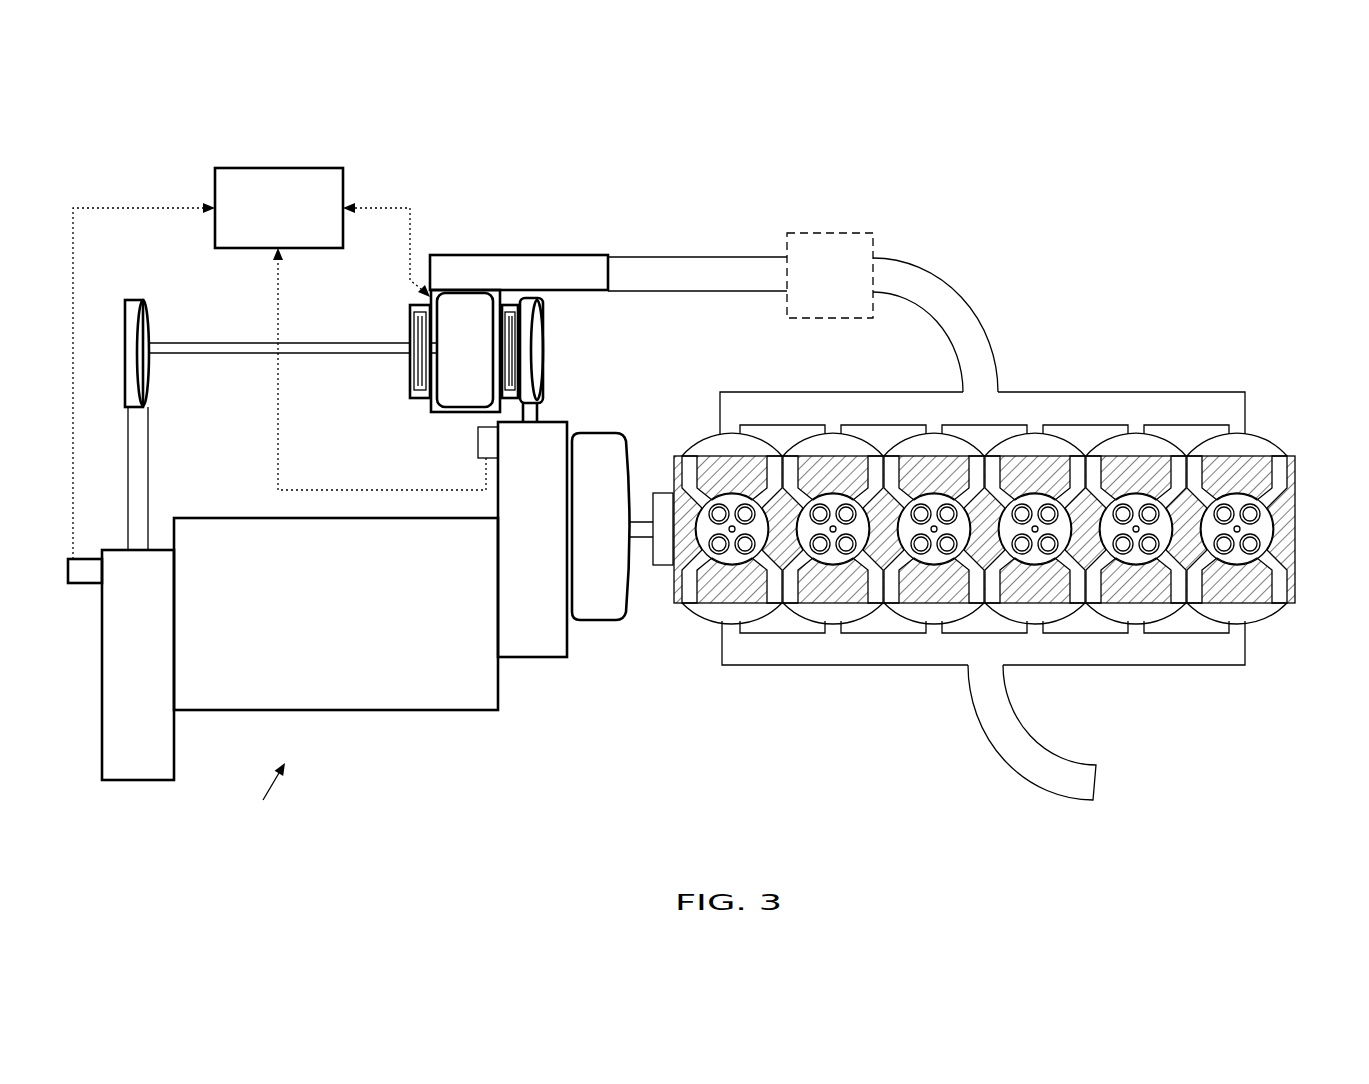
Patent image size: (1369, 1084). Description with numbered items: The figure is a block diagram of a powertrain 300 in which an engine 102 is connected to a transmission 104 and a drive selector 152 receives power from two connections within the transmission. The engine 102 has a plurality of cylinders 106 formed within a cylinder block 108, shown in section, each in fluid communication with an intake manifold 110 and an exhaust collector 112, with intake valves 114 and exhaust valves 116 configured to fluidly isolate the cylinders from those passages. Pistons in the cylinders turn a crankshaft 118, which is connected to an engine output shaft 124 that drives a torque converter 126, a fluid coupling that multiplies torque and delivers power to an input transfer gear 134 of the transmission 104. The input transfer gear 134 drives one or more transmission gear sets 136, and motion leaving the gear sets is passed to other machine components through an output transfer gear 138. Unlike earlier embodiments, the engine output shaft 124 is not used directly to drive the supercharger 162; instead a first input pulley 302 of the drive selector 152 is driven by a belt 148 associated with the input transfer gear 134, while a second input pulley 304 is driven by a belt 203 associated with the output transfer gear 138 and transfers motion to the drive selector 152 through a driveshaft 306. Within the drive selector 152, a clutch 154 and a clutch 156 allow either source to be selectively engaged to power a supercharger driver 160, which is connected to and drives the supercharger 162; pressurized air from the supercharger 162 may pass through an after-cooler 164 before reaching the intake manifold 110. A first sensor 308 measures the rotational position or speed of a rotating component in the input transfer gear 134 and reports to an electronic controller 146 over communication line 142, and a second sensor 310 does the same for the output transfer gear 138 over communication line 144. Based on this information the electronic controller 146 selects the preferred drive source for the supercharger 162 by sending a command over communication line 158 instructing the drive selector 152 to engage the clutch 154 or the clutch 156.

The engine 102 is at (1021, 544).
The transmission 104 is at (256, 794).
The cylinders 106 is at (769, 605).
The cylinder block 108 is at (1021, 605).
The intake manifold 110 is at (1050, 403).
The exhaust collector 112 is at (1118, 657).
The intake valves 114 is at (745, 513).
The exhaust valves 116 is at (718, 545).
The crankshaft 118 is at (663, 558).
The engine output shaft 124 is at (645, 538).
The torque converter 126 is at (583, 541).
The input transfer gear 134 is at (518, 541).
The transmission gear sets 136 is at (319, 622).
The output transfer gear 138 is at (123, 676).
The communication line 142 is at (392, 488).
The communication line 144 is at (105, 207).
The electronic controller 146 is at (262, 216).
The belt 148 is at (540, 413).
The drive selector 152 is at (568, 240).
The clutch 154 is at (409, 313).
The clutch 156 is at (507, 305).
The communication line 158 is at (393, 215).
The supercharger driver 160 is at (460, 300).
The supercharger 162 is at (578, 268).
The after-cooler 164 is at (845, 233).
The belt 203 is at (148, 487).
The powertrain 300 is at (1109, 235).
The first input pulley 302 is at (530, 308).
The second input pulley 304 is at (138, 298).
The driveshaft 306 is at (248, 343).
The first sensor 308 is at (478, 430).
The second sensor 310 is at (85, 585).